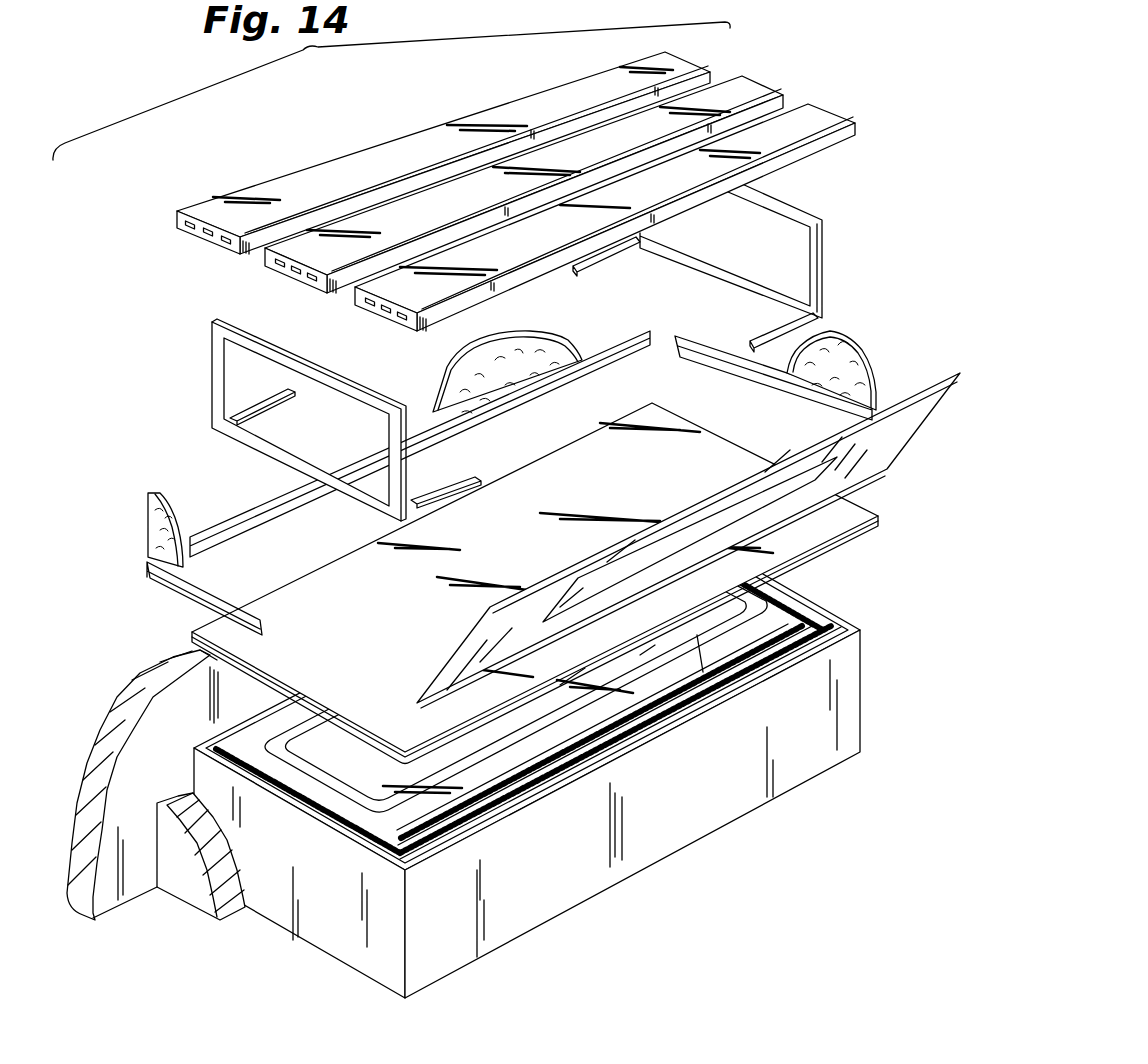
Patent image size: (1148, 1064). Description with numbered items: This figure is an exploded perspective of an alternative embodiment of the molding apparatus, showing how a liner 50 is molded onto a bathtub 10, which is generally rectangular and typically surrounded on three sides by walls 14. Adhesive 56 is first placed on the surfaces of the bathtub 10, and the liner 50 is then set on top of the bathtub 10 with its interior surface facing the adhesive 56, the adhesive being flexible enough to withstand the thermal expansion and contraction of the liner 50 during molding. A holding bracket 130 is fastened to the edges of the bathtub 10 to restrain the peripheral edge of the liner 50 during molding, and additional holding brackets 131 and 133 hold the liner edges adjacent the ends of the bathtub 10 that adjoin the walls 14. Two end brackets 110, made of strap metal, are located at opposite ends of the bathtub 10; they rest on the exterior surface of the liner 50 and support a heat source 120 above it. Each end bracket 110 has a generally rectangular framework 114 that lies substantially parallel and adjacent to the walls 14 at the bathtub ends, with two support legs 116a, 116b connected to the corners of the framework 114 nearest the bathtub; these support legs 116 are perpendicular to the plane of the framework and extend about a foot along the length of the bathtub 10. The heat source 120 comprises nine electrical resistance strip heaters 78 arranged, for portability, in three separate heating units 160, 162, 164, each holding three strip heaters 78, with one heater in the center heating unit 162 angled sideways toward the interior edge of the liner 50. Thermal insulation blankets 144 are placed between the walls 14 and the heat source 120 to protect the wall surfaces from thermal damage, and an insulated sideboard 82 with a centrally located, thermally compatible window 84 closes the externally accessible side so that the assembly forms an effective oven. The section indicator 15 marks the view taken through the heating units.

The bathtub 10 is at (677, 836).
The walls 14 is at (125, 878).
The section line 15 is at (330, 188).
The liner 50 is at (333, 573).
The adhesive 56 is at (797, 605).
The strip heaters 78 is at (202, 237).
The sideboard 82 is at (688, 540).
The window 84 is at (733, 527).
The end brackets 110 is at (832, 250).
The rectangular framework 114 is at (213, 357).
The support legs 116 is at (770, 329).
The support leg 116a is at (270, 402).
The support leg 116b is at (447, 488).
The heat source 120 is at (538, 180).
The holding bracket 130 is at (240, 508).
The holding bracket 131 is at (168, 600).
The holding bracket 133 is at (763, 383).
The thermal insulation blanket 144 is at (148, 522).
The heating unit 160 is at (693, 67).
The heating unit 162 is at (762, 92).
The heating unit 164 is at (830, 121).